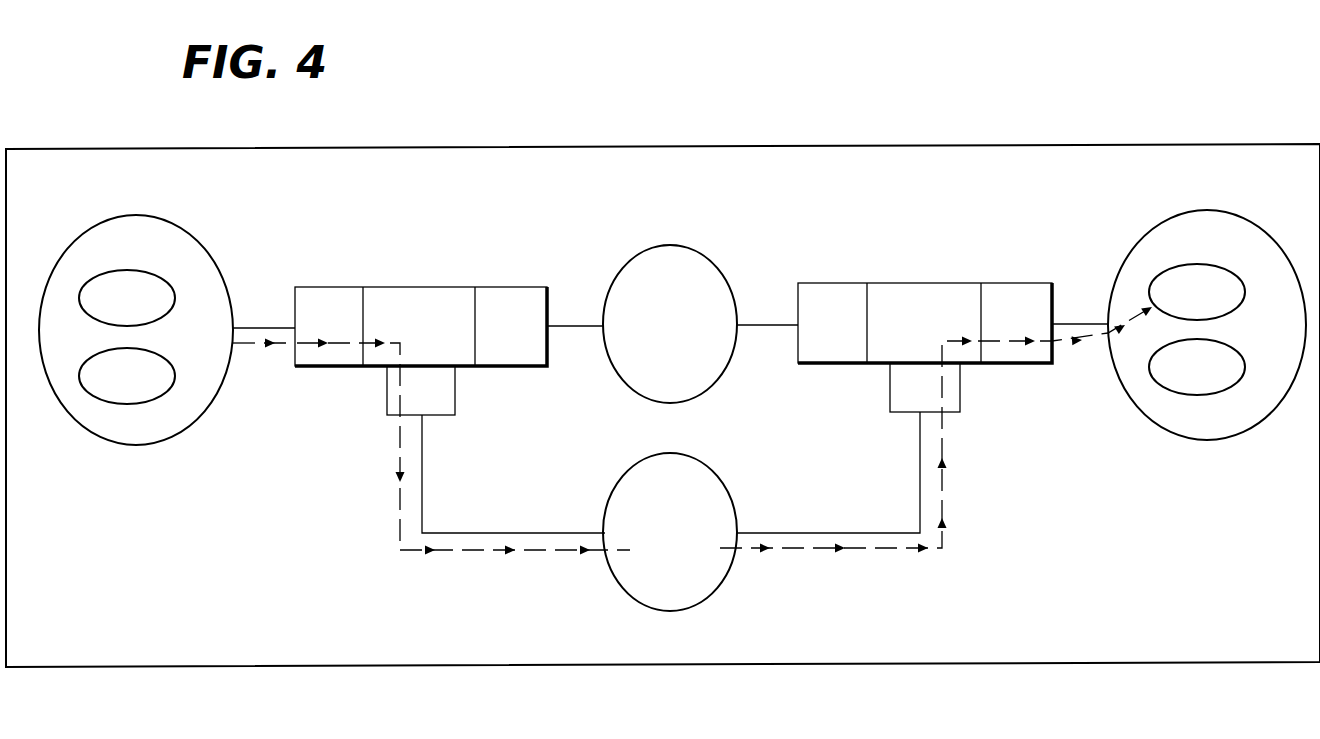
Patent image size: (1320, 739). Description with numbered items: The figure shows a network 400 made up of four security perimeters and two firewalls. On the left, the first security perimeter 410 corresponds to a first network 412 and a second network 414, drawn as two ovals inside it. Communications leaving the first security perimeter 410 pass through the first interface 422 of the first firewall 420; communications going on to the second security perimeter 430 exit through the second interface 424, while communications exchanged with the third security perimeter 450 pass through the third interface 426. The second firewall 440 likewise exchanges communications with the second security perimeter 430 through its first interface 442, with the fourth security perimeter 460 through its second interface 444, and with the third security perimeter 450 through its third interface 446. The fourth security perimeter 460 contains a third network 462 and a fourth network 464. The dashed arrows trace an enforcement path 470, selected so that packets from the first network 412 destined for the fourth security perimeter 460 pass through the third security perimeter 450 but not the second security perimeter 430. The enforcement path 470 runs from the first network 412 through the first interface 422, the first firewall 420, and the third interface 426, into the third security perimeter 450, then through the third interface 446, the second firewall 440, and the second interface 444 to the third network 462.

The network 400 is at (1006, 630).
The first security perimeter 410 is at (157, 255).
The first network 412 is at (167, 280).
The second network 414 is at (153, 402).
The first firewall 420 is at (438, 260).
The first interface of the first firewall 422 is at (345, 297).
The second interface of the first firewall 424 is at (530, 295).
The third interface of the first firewall 426 is at (387, 402).
The second security perimeter 430 is at (700, 254).
The second firewall 440 is at (943, 260).
The first interface of the second firewall 442 is at (848, 293).
The second interface of the second firewall 444 is at (1035, 293).
The third interface of the second firewall 446 is at (890, 404).
The third security perimeter 450 is at (700, 462).
The fourth security perimeter 460 is at (1188, 250).
The third network 462 is at (1162, 268).
The fourth network 464 is at (1175, 396).
The enforcement path 470 is at (477, 555).